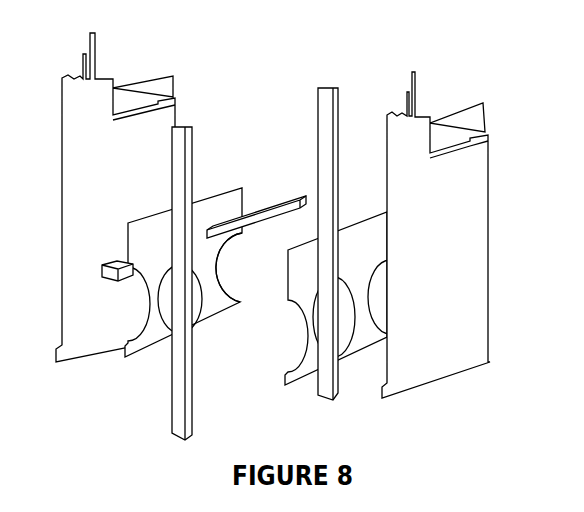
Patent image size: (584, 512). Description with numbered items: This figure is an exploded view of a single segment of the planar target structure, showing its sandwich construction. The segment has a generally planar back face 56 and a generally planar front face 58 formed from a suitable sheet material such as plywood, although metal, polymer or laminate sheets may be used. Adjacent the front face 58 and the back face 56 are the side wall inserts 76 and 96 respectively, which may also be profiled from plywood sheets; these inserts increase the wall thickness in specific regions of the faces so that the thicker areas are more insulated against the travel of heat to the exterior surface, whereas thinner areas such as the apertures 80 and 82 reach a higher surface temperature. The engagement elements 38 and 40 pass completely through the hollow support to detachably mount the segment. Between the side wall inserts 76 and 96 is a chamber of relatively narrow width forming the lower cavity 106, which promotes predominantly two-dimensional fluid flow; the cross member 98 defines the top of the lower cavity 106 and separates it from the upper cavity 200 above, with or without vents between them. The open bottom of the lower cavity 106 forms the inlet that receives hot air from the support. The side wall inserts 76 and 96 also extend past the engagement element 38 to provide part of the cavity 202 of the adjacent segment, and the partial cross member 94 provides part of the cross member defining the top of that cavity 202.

The back face 56 is at (162, 85).
The front face 58 is at (462, 205).
The engagement element 38 is at (192, 132).
The engagement element 40 is at (336, 97).
The side wall insert 96 is at (191, 203).
The cross member 98 is at (268, 203).
The partial cross member 94 is at (112, 265).
The side wall insert 76 is at (304, 363).
The aperture 80 is at (196, 290).
The aperture 82 is at (215, 265).
The upper cavity 200 is at (280, 131).
The cavity 202 is at (130, 388).
The lower cavity 106 is at (283, 360).